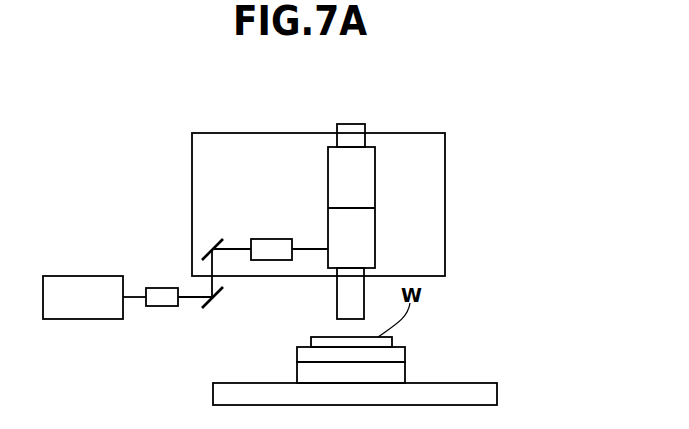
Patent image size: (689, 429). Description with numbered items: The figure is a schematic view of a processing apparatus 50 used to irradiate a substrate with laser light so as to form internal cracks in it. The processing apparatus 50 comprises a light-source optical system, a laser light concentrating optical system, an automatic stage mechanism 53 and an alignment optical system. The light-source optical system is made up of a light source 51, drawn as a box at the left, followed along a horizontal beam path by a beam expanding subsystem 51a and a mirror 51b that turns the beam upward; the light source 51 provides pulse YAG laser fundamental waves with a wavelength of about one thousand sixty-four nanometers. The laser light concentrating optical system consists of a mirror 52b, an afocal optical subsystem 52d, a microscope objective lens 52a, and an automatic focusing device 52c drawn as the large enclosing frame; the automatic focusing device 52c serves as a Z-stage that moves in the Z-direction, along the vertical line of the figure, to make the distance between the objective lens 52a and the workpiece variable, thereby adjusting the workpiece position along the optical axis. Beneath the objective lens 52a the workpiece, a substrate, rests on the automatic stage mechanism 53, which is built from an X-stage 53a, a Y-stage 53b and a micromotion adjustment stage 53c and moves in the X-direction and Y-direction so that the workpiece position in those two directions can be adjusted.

The processing apparatus 50 is at (470, 176).
The light source 51 is at (78, 276).
The beam expanding subsystem 51a is at (163, 288).
The mirror 51b is at (210, 306).
The microscope objective lens 52a is at (347, 298).
The mirror 52b is at (206, 252).
The automatic focusing device 52c is at (213, 133).
The afocal optical subsystem 52d is at (272, 239).
The automatic stage mechanism 53 is at (417, 341).
The X-stage 53a is at (391, 376).
The Y-stage 53b is at (393, 372).
The micromotion adjustment stage 53c is at (393, 352).